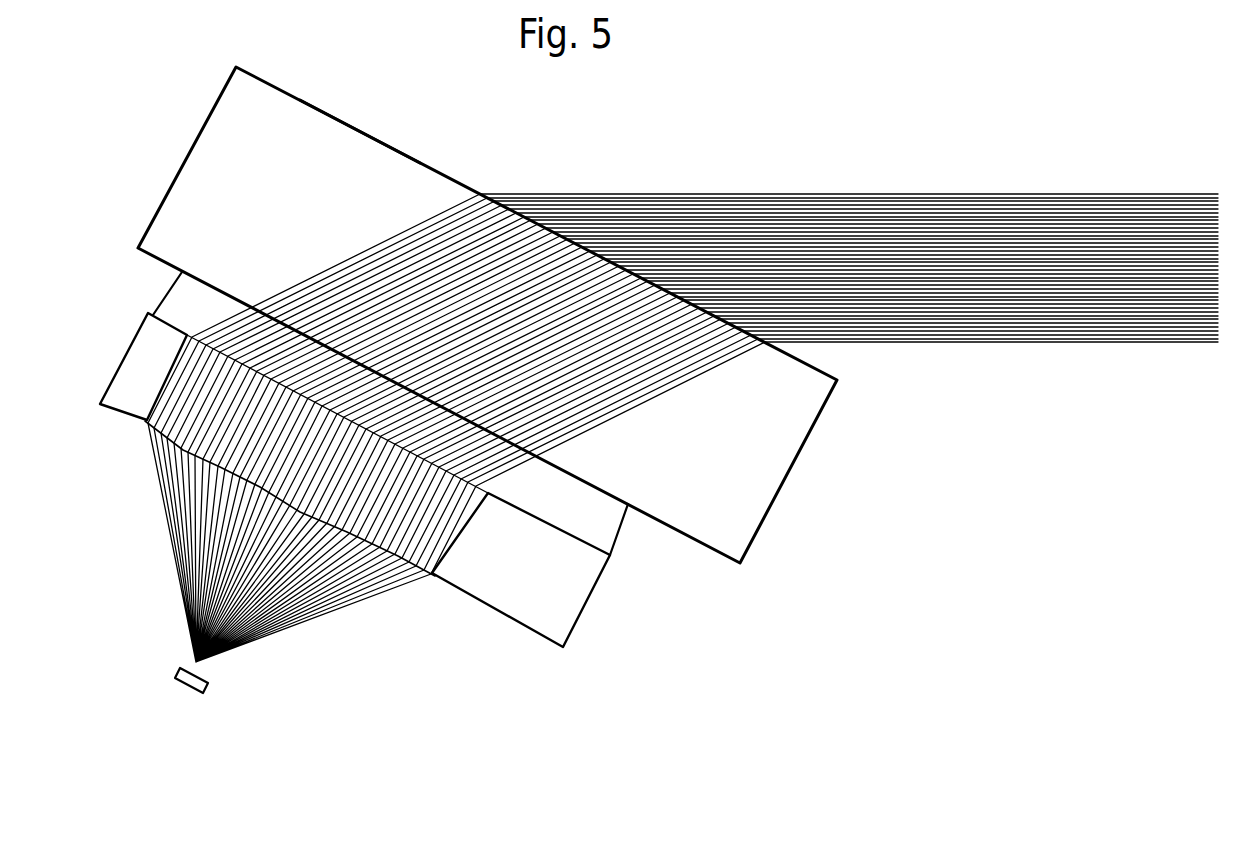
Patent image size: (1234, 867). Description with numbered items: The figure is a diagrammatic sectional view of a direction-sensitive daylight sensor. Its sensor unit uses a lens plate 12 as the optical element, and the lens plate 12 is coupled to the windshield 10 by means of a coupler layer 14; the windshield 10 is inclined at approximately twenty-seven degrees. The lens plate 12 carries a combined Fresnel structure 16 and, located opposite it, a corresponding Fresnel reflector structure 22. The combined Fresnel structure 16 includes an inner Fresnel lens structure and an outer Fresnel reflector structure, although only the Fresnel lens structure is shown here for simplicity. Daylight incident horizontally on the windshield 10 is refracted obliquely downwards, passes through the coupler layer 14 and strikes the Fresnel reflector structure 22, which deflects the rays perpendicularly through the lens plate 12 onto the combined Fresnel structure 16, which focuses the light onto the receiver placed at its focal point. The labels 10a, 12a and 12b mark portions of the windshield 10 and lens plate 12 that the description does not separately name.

The windshield 10 is at (722, 450).
The light exit surface 10a is at (360, 133).
The lens plate 12 is at (543, 641).
The coupling element side part 12a is at (115, 416).
The coupling element side wall 12b is at (153, 313).
The coupler layer 14 is at (626, 527).
The combined Fresnel structure 16 is at (287, 515).
The Fresnel reflector structure 22 is at (181, 690).